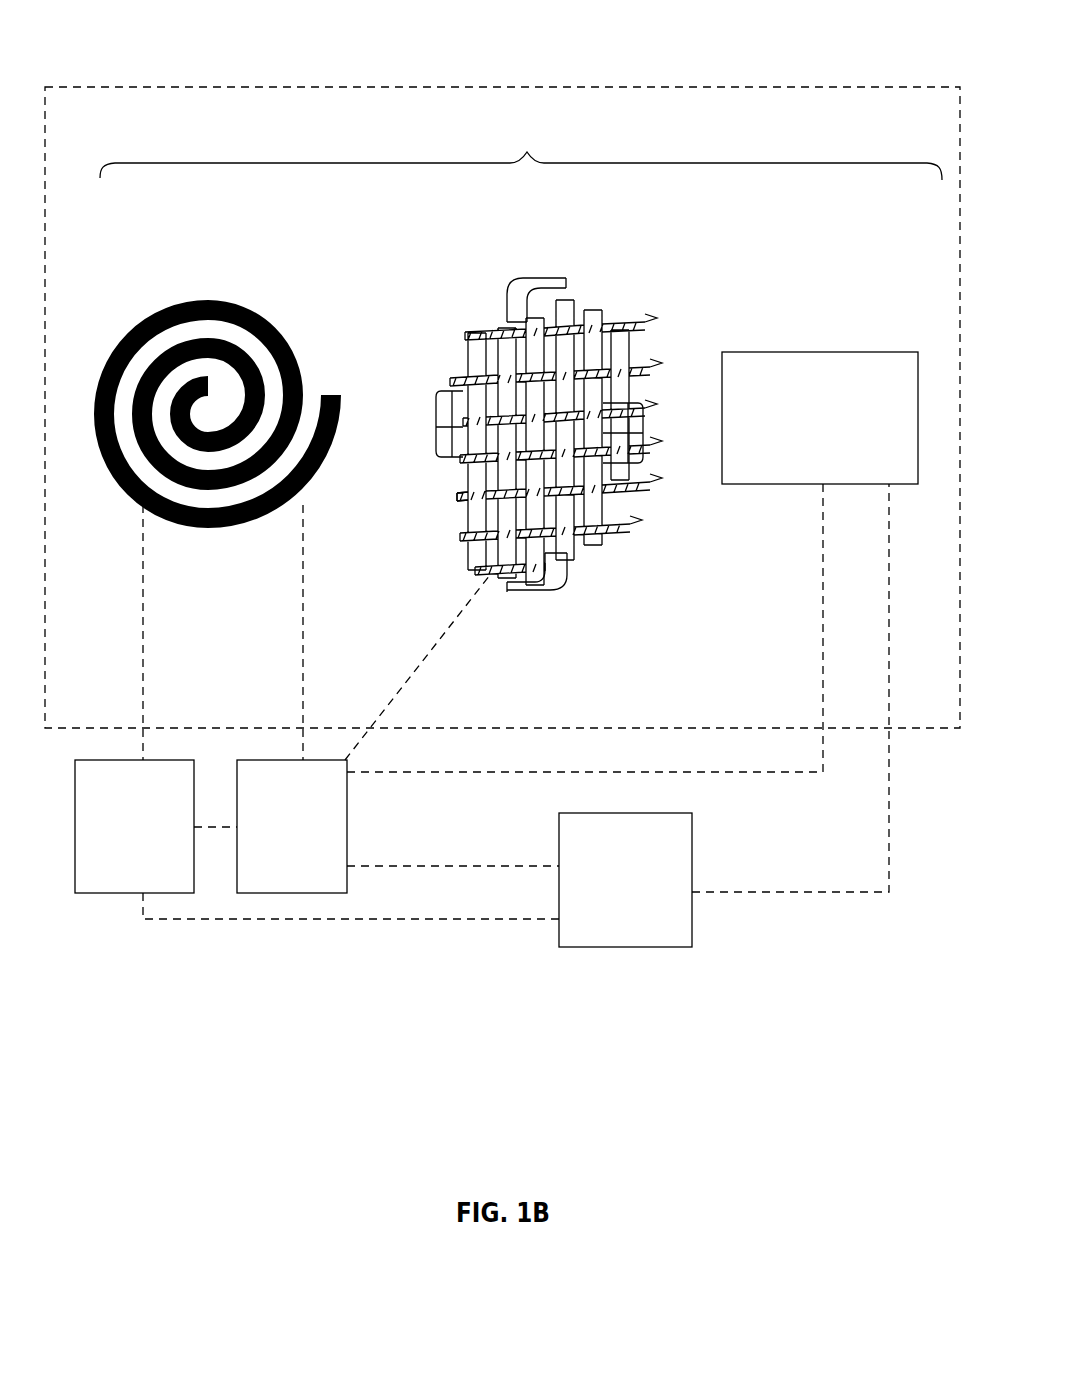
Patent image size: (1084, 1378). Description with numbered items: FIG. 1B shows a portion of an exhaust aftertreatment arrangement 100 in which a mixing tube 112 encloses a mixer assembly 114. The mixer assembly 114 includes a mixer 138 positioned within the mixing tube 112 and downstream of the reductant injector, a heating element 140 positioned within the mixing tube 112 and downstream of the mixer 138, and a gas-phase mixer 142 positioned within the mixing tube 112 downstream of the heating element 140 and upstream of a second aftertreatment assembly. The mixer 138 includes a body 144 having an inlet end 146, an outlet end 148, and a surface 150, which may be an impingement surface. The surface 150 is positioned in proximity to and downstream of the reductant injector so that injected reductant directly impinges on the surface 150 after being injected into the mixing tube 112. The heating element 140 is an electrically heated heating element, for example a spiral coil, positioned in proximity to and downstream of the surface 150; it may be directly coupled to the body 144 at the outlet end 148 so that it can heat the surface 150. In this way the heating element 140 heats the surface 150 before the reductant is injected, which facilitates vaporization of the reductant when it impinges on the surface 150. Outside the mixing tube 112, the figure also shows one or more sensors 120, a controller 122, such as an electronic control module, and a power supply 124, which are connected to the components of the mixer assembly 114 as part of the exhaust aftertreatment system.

The system 100 is at (784, 58).
The mixing tube 112 is at (240, 87).
The mixer assembly 114 is at (690, 163).
The one or more sensors 120 is at (308, 881).
The controller 122 is at (641, 907).
The power supply 124 is at (151, 868).
The mixer 138 is at (567, 243).
The heating element 140 is at (206, 297).
The gas-phase mixer 142 is at (836, 446).
The body 144 is at (607, 300).
The inlet end 146 is at (432, 362).
The outlet end 148 is at (600, 569).
The surface 150 is at (468, 490).